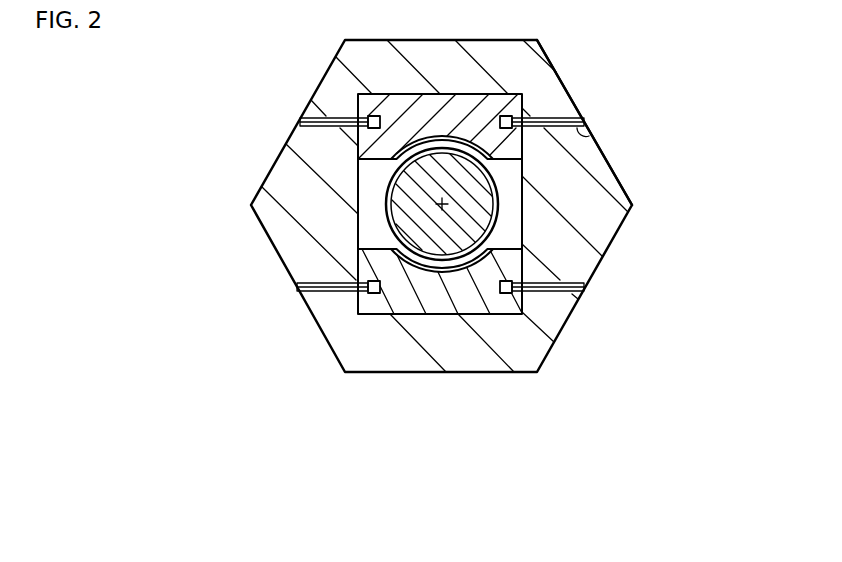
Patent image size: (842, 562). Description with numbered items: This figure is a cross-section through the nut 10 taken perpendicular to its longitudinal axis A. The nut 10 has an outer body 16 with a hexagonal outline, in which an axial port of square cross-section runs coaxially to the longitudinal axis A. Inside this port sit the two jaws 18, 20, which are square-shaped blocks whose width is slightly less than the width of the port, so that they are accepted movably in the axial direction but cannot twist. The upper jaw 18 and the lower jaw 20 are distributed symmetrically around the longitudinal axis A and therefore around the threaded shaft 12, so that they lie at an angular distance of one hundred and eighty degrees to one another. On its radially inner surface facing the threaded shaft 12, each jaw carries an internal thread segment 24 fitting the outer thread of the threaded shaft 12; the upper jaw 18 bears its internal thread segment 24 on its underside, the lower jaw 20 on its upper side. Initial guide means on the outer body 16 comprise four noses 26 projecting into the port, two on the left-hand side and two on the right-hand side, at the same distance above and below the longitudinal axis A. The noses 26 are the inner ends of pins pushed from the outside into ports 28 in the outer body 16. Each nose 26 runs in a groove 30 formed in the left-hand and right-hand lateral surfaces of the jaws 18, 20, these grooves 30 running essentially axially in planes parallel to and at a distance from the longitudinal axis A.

The nut 10 is at (553, 64).
The threaded shaft 12 is at (388, 189).
The outer body 16 is at (628, 193).
The upper jaw 18 is at (382, 93).
The lower jaw 20 is at (386, 315).
The internal thread segment 24 is at (441, 276).
The nose 26 is at (502, 284).
The port 28 is at (588, 134).
The groove 30 is at (378, 293).
The longitudinal axis A is at (442, 205).